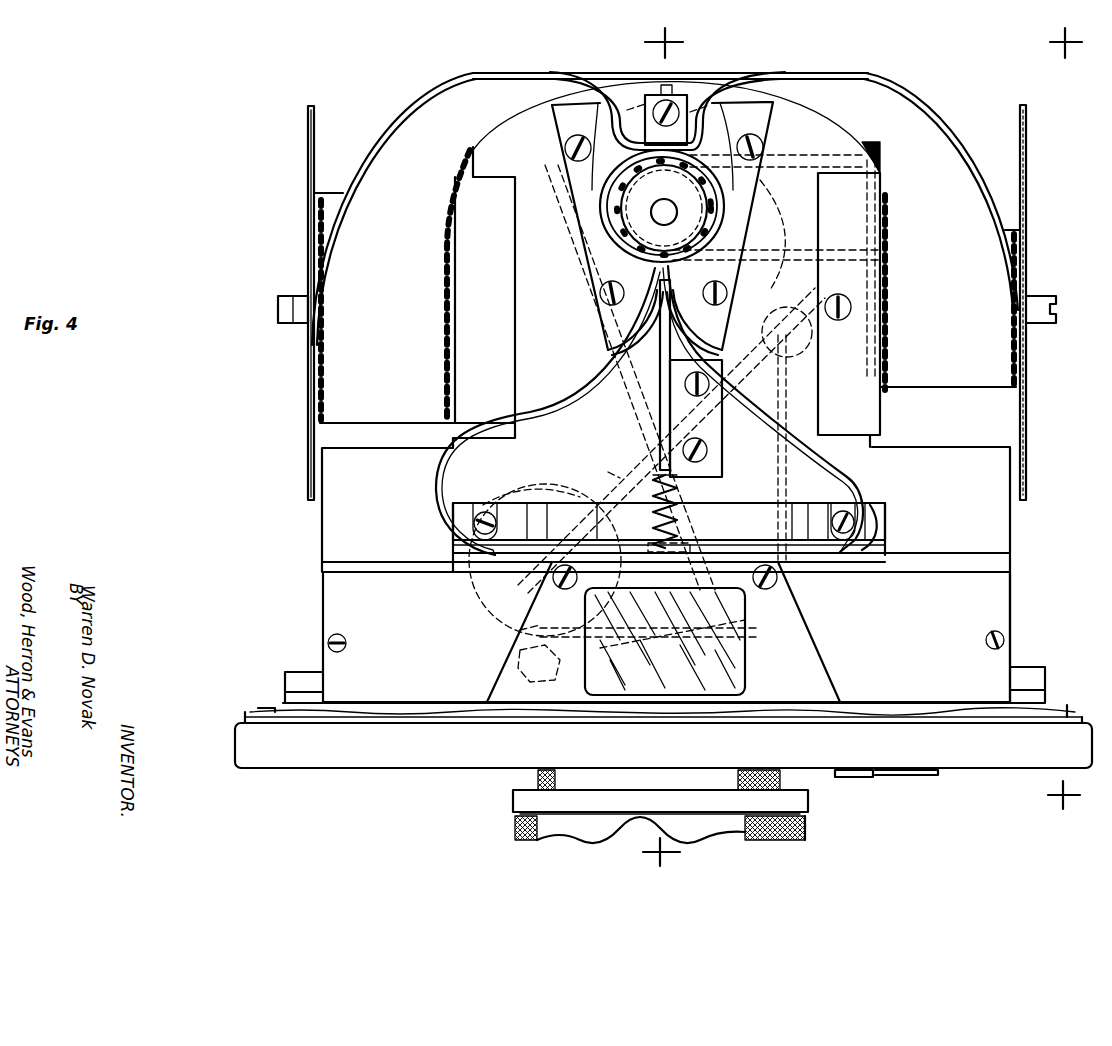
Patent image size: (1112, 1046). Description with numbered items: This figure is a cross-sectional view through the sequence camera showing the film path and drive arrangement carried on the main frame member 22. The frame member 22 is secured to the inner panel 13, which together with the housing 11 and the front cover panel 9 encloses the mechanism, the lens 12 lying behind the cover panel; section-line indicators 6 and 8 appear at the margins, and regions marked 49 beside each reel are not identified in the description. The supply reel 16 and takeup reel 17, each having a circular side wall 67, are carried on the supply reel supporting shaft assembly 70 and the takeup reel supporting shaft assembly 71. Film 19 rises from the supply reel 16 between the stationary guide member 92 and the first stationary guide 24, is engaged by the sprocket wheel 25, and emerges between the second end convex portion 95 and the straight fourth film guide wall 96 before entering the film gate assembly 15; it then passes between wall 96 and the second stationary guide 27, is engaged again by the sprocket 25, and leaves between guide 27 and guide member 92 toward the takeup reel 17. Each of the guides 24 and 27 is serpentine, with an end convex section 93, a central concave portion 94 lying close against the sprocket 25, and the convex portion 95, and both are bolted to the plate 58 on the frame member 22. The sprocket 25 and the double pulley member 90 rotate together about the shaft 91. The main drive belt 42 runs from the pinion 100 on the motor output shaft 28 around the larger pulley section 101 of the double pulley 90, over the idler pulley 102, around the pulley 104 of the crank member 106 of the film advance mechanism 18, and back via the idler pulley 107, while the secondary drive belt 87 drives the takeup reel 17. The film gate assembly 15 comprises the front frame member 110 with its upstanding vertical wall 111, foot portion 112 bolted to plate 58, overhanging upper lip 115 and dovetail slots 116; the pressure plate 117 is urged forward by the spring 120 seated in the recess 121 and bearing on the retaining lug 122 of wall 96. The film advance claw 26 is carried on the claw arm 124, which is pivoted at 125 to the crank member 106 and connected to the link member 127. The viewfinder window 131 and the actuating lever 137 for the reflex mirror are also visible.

The section line 6- 6 is at (1075, 418).
The protective cone 8 is at (672, 447).
The front cover panel 9 is at (427, 770).
The housing 11 is at (280, 710).
The lens 12 is at (808, 826).
The inner panel 13 is at (300, 713).
The film gate assembly 15 is at (736, 513).
The supply reel 16 is at (306, 432).
The takeup reel 17 is at (1028, 170).
The film advance mechanism 18 is at (482, 634).
The film 19 is at (570, 410).
The main frame member 22 is at (1014, 562).
The first stationary guide 24 is at (577, 232).
The sprocket wheel 25 is at (664, 208).
The film advance claw 26 is at (746, 634).
The second stationary guide 27 is at (754, 214).
The output shaft 28 is at (613, 436).
The main drive belt 42 is at (608, 472).
The coil 49 is at (667, 289).
The plate 58 is at (666, 574).
The side wall 67 is at (315, 120).
The supply reel supporting shaft assembly 70 is at (289, 326).
The takeup reel supporting shaft assembly 71 is at (1058, 304).
The secondary drive belt 87 is at (838, 250).
The double pulley member 90 is at (568, 204).
The shaft 91 is at (676, 216).
The stationary guide member 92 is at (697, 80).
The end convex section 93 is at (565, 118).
The central concave portion 94 is at (598, 205).
The second end convex portion 95 is at (614, 310).
The fourth film guide wall 96 is at (672, 404).
The pinion 100 is at (671, 440).
The larger pulley section 101 is at (766, 235).
The idler pulley 102 is at (745, 638).
The pulley 104 is at (488, 600).
The crank member 106 is at (525, 483).
The idler pulley 107 is at (812, 300).
The front frame member 110 is at (850, 569).
The upstanding vertical wall 111 is at (878, 566).
The foot portion 112 is at (878, 528).
The overhanging upper lip 115 is at (806, 560).
The dovetail slots 116 is at (537, 513).
The pressure plate 117 is at (618, 552).
The spring 120 is at (678, 490).
The recess 121 is at (699, 534).
The retaining lug 122 is at (656, 488).
The claw arm 124 is at (630, 665).
The pivot 125 is at (520, 672).
The link member 127 is at (800, 400).
The viewfinder window 131 is at (745, 673).
The actuating lever 137 is at (890, 775).